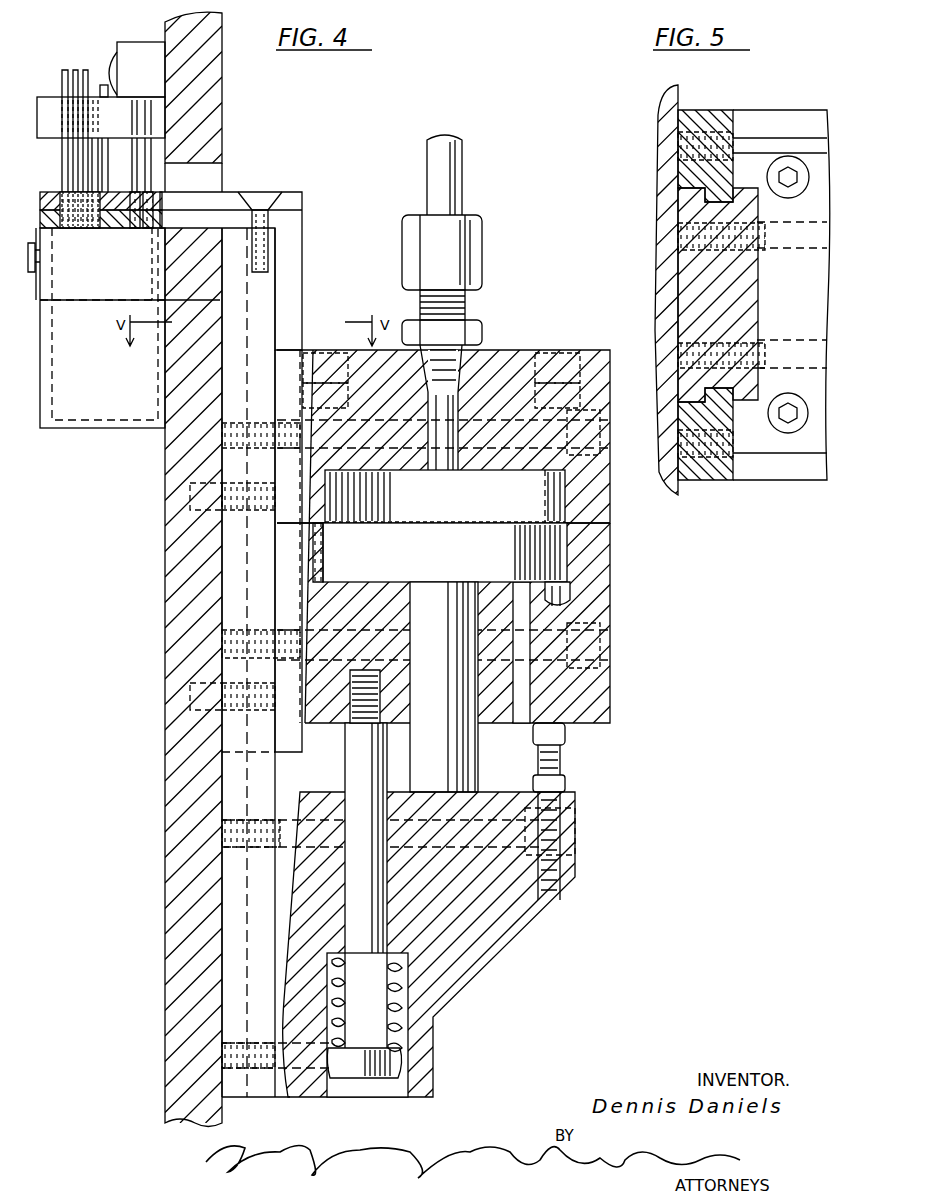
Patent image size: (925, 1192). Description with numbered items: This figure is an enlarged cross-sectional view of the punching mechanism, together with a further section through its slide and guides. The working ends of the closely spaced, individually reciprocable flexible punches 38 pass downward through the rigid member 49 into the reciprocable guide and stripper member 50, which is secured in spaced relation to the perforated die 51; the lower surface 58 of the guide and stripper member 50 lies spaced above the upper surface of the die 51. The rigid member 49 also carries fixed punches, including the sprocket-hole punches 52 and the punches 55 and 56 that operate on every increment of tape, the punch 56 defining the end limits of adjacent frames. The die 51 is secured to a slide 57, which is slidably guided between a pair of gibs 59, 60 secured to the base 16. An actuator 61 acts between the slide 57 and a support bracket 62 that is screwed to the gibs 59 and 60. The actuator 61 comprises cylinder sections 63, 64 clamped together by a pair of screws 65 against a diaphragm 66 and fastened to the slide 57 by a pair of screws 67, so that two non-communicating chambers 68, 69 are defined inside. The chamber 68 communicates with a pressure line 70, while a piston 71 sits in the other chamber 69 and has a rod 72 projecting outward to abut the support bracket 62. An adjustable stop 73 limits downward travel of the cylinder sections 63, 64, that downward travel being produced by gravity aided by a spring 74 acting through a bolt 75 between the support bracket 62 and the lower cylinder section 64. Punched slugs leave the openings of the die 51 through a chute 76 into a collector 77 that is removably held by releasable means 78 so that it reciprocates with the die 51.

In FIG. 4, the base 16 is at (217, 100).
In FIG. 5, the base 16 is at (658, 228).
In FIG. 4, the flexible punches 38 is at (76, 70).
In FIG. 4, the rigid member 49 is at (45, 97).
In FIG. 4, the guide and stripper member 50 is at (52, 192).
In FIG. 4, the die 51 is at (40, 218).
In FIG. 4, the punches 52 is at (96, 152).
In FIG. 4, the punch 55 is at (140, 152).
In FIG. 4, the punch 56 is at (148, 174).
In FIG. 4, the slide 57 is at (300, 253).
In FIG. 5, the slide 57 is at (690, 292).
In FIG. 4, the lower surface 58 is at (118, 228).
In FIG. 5, the gib 59 is at (703, 116).
In FIG. 4, the gib 60 is at (262, 770).
In FIG. 5, the gib 60 is at (713, 480).
In FIG. 4, the actuator 61 is at (508, 350).
In FIG. 4, the support bracket 62 is at (478, 960).
In FIG. 5, the support bracket 62 is at (803, 129).
In FIG. 4, the cylinder section 63 is at (610, 495).
In FIG. 5, the cylinder section 63 is at (822, 158).
In FIG. 4, the cylinder section 64 is at (610, 570).
In FIG. 4, the screws 65 is at (332, 358).
In FIG. 5, the screws 65 is at (792, 195).
In FIG. 4, the diaphragm 66 is at (610, 524).
In FIG. 4, the screws 67 is at (610, 433).
In FIG. 5, the screws 67 is at (795, 255).
In FIG. 4, the chamber 68 is at (484, 507).
In FIG. 4, the chamber 69 is at (560, 592).
In FIG. 4, the pressure line 70 is at (456, 165).
In FIG. 4, the piston 71 is at (420, 560).
In FIG. 4, the rod 72 is at (444, 708).
In FIG. 4, the adjustable stop 73 is at (568, 735).
In FIG. 4, the spring 74 is at (415, 1012).
In FIG. 4, the bolt 75 is at (366, 936).
In FIG. 4, the chute 76 is at (155, 246).
In FIG. 4, the collector 77 is at (55, 428).
In FIG. 4, the releasable means 78 is at (30, 272).